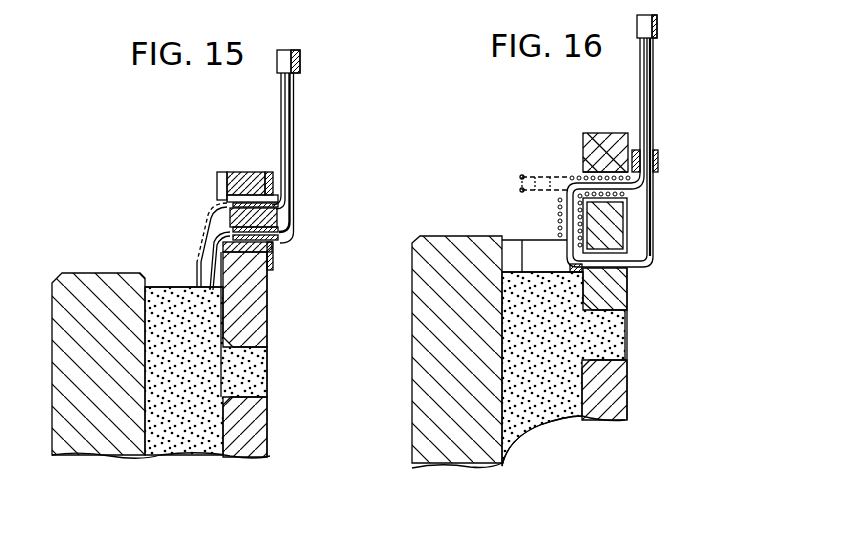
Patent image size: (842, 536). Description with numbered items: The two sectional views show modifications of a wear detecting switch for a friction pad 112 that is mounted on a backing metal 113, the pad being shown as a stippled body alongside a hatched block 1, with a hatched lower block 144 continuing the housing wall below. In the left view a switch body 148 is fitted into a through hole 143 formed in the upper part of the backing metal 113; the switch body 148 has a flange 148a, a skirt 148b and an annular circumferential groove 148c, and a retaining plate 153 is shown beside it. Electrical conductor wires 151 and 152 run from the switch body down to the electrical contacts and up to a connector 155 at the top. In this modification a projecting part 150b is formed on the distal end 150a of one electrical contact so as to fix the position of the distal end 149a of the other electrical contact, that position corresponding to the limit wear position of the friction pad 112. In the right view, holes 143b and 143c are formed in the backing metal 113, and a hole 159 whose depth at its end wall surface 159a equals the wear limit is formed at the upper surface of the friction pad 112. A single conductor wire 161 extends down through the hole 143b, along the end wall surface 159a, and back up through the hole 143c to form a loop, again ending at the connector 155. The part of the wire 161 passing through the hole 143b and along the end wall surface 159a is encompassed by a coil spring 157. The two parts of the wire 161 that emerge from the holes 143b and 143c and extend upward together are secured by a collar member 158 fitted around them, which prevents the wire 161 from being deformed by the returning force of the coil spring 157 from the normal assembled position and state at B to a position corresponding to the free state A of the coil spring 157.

In FIG. 15, the base body 1 is at (110, 436).
In FIG. 16, the base body 1 is at (415, 332).
In FIG. 15, the friction pad 112 is at (192, 436).
In FIG. 16, the friction pad 112 is at (558, 408).
In FIG. 15, the backing metal 113 is at (255, 310).
In FIG. 16, the backing metal 113 is at (607, 133).
In FIG. 15, the through hole 143 is at (213, 307).
In FIG. 16, the hole 143b is at (586, 135).
In FIG. 16, the hole 143c is at (620, 273).
In FIG. 15, the lower housing block 144 is at (245, 350).
In FIG. 16, the lower housing block 144 is at (609, 314).
In FIG. 15, the switch body 148 is at (254, 207).
In FIG. 15, the flange 148a is at (218, 170).
In FIG. 15, the skirt 148b is at (248, 172).
In FIG. 15, the annular circumferential groove 148c is at (283, 242).
In FIG. 15, the distal end of the electrical contact 149a is at (207, 218).
In FIG. 15, the distal end of the electrical contact 150a is at (220, 293).
In FIG. 15, the projecting part 150b is at (212, 260).
In FIG. 15, the electrical conductor wire 151 is at (295, 127).
In FIG. 15, the electrical conductor wire 152 is at (283, 220).
In FIG. 15, the retaining plate 153 is at (274, 256).
In FIG. 15, the connector 155 is at (300, 60).
In FIG. 16, the connector 155 is at (657, 26).
In FIG. 16, the coil spring 157 is at (574, 180).
In FIG. 16, the collar member 158 is at (653, 160).
In FIG. 16, the hole 159 is at (522, 245).
In FIG. 16, the end wall surface 159a is at (572, 272).
In FIG. 16, the single conductor wire 161 is at (653, 91).
In FIG. 15, the free state A is at (200, 250).
In FIG. 16, the free state A is at (520, 183).
In FIG. 15, the normal assembled position B is at (203, 263).
In FIG. 16, the normal assembled position B is at (558, 235).